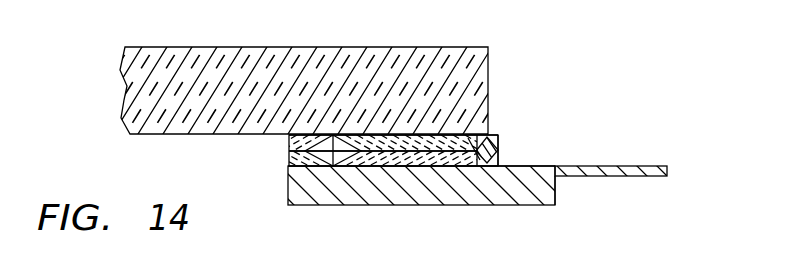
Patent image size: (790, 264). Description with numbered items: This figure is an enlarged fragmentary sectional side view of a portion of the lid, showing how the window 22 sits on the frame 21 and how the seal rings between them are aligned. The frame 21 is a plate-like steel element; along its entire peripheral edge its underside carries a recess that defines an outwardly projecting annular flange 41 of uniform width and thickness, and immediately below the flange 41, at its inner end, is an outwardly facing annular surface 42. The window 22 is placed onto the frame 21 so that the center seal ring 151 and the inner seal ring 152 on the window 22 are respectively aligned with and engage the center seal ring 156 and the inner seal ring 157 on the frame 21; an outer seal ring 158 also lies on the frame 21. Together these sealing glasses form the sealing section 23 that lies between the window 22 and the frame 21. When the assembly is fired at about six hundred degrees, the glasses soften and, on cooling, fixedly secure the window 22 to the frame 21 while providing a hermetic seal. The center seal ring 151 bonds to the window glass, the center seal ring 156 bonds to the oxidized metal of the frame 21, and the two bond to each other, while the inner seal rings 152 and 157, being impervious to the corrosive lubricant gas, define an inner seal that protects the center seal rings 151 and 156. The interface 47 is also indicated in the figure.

The window 22 is at (128, 97).
The frame 21 is at (353, 206).
The annular flange 41 is at (643, 165).
The annular surface 42 is at (555, 190).
The inner seal ring 152 is at (290, 147).
The inner seal ring 157 is at (290, 162).
The interface line 47 is at (288, 188).
The center seal ring 156 is at (427, 162).
The outer seal ring 158 is at (493, 150).
The center seal ring 151 is at (470, 134).
The sealing section 23 is at (508, 127).